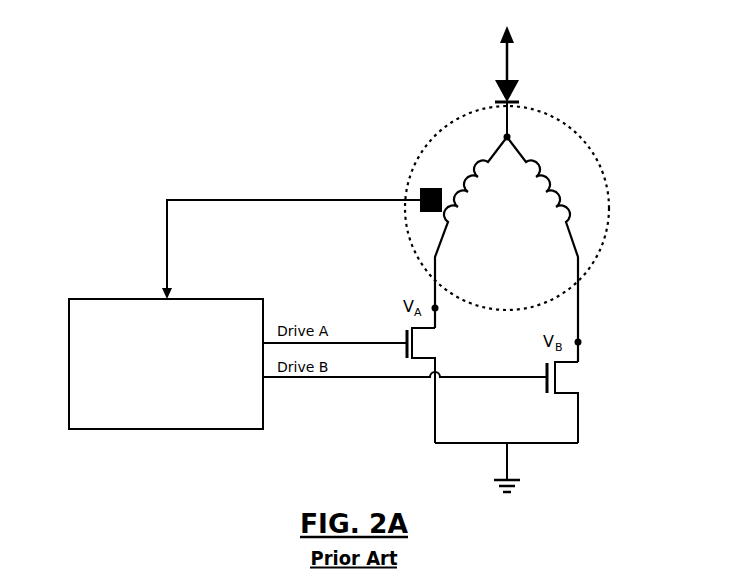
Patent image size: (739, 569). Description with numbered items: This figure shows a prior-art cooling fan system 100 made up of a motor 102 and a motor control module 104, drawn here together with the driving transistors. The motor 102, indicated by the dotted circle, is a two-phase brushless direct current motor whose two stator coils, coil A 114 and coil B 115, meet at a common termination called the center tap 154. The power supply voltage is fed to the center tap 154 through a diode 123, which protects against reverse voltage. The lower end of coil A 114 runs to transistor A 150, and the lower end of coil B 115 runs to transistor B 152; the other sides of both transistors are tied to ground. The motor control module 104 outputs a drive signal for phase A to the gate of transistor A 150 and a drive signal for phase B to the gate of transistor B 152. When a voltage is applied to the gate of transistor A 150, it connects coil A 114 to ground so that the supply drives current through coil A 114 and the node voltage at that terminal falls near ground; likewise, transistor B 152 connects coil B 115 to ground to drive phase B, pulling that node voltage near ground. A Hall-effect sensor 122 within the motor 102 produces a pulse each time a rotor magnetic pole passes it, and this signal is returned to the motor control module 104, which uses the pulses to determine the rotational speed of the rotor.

The cooling fan system 100 is at (196, 72).
The motor 102 is at (601, 247).
The motor control module 104 is at (69, 362).
The coil A 114 is at (473, 178).
The coil B 115 is at (565, 213).
The Hall-effect sensor 122 is at (420, 207).
The diode 123 is at (494, 85).
The transistor A 150 is at (406, 330).
The transistor B 152 is at (547, 386).
The center tap 154 is at (507, 137).